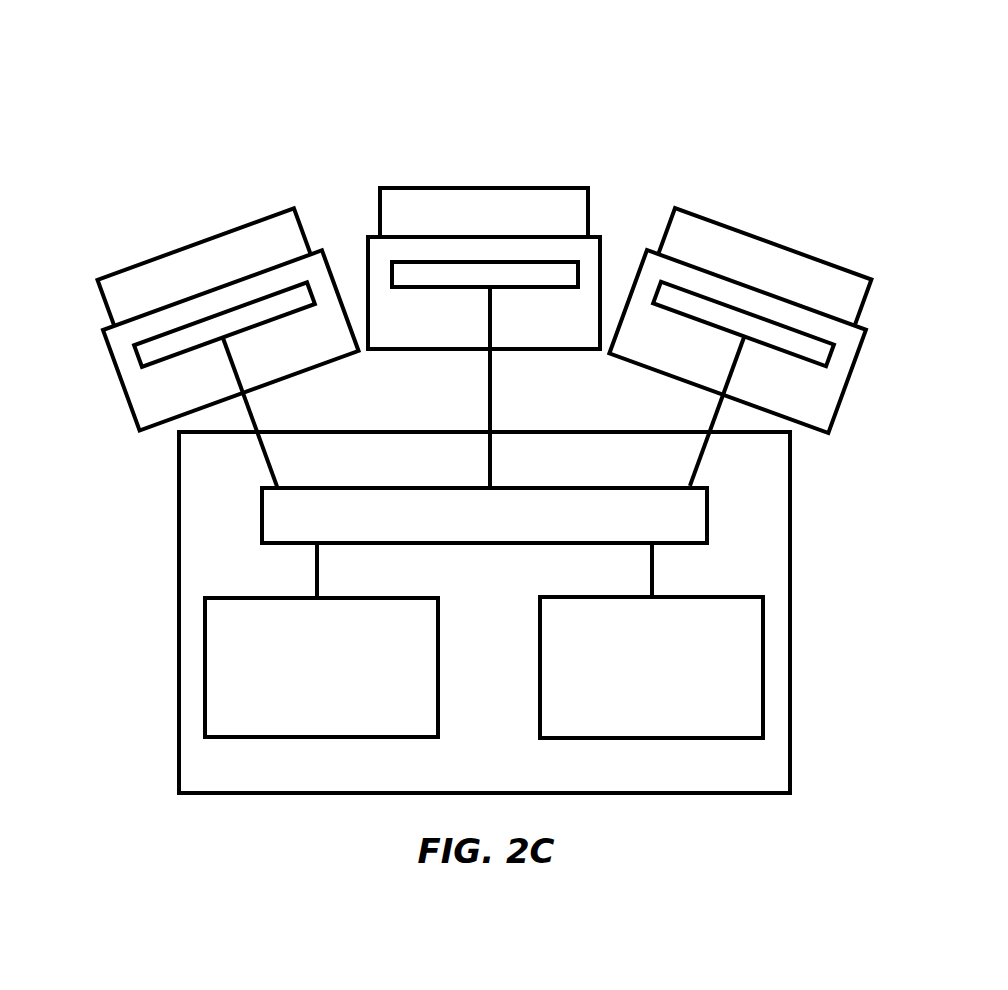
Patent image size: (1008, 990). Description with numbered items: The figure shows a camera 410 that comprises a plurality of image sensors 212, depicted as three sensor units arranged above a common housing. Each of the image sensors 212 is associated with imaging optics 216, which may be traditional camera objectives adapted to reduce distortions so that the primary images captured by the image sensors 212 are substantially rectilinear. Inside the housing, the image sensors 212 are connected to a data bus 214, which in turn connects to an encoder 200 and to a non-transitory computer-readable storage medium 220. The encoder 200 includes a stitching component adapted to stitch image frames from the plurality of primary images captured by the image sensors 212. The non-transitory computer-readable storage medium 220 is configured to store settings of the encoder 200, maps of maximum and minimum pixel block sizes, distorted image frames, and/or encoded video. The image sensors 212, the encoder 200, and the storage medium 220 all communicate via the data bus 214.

The camera 410 is at (106, 111).
The image sensors 212 is at (157, 353).
The imaging optics 216 is at (168, 272).
The data bus 214 is at (484, 515).
The encoder 200 is at (321, 640).
The non-transitory computer-readable storage medium 220 is at (651, 640).